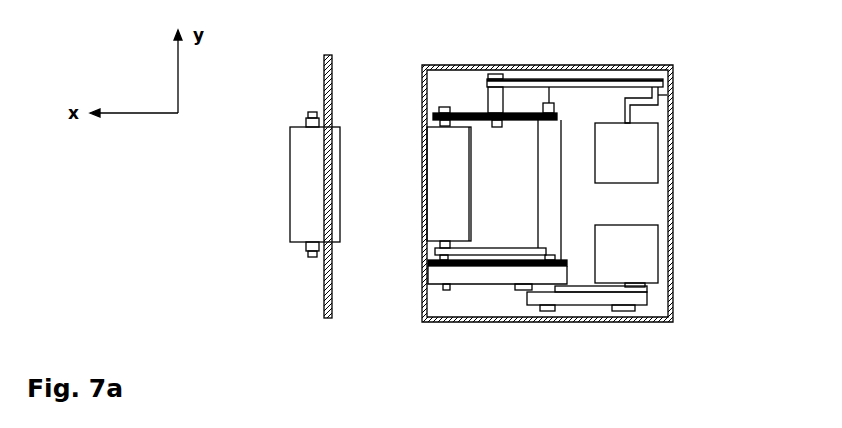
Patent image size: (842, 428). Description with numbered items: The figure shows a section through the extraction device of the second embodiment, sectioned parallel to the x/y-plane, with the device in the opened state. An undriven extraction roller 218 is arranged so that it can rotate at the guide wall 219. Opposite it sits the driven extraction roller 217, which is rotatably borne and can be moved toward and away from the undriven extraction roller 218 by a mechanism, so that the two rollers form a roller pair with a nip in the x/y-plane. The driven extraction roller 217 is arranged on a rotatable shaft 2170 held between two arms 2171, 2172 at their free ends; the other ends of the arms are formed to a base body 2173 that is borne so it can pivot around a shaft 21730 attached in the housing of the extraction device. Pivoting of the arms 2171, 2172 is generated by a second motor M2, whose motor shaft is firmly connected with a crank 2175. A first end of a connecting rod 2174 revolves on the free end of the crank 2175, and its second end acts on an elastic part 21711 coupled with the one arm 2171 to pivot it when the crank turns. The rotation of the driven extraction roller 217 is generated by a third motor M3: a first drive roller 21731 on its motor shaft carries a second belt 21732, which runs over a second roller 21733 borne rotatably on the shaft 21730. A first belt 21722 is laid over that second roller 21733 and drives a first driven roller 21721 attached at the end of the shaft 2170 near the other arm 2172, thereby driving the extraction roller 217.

The driven extraction roller 217 is at (440, 158).
The undriven extraction roller 218 is at (298, 157).
The guide wall 219 is at (322, 282).
The rotatable shaft 2170 is at (448, 107).
The arm 2171 is at (460, 113).
The elastic part 21711 is at (488, 102).
The arm 2172 is at (433, 253).
The first driven roller 21721 is at (446, 283).
The first belt 21722 is at (475, 272).
The base body 2173 is at (550, 202).
The shaft 21730 is at (557, 79).
The first drive roller 21731 is at (668, 317).
The second belt 21732 is at (578, 296).
The second roller 21733 is at (520, 287).
The connecting rod 2174 is at (632, 76).
The crank 2175 is at (668, 98).
The second motor M2 is at (645, 151).
The third motor M3 is at (640, 252).